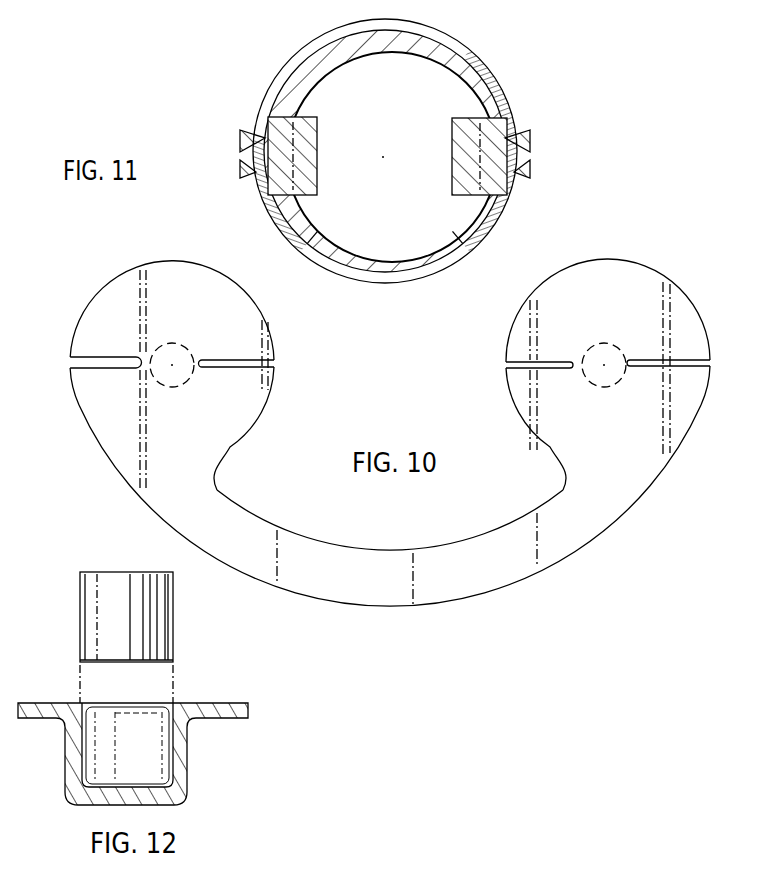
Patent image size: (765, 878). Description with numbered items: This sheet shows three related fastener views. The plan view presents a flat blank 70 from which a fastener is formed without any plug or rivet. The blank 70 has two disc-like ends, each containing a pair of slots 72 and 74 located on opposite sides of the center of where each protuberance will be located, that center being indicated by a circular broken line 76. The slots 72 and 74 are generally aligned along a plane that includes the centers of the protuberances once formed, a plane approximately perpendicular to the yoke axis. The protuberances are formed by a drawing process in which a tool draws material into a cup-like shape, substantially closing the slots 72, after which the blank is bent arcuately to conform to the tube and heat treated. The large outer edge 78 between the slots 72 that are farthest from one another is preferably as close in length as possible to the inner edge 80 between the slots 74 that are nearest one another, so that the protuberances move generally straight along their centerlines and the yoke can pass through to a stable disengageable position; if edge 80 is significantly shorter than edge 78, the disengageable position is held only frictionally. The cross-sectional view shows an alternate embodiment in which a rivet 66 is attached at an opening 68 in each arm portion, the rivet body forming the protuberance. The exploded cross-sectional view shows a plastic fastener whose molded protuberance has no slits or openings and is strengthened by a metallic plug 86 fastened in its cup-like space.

In FIG. 11, the rivet 66 is at (318, 137).
In FIG. 11, the opening 68 is at (253, 176).
In FIG. 10, the blank 70 is at (100, 445).
In FIG. 10, the slot 72 is at (90, 357).
In FIG. 10, the slot 74 is at (268, 368).
In FIG. 10, the circular broken line 76 is at (173, 341).
In FIG. 10, the edge 78 is at (502, 589).
In FIG. 10, the edge 80 is at (363, 548).
In FIG. 12, the metallic plug 86 is at (174, 633).